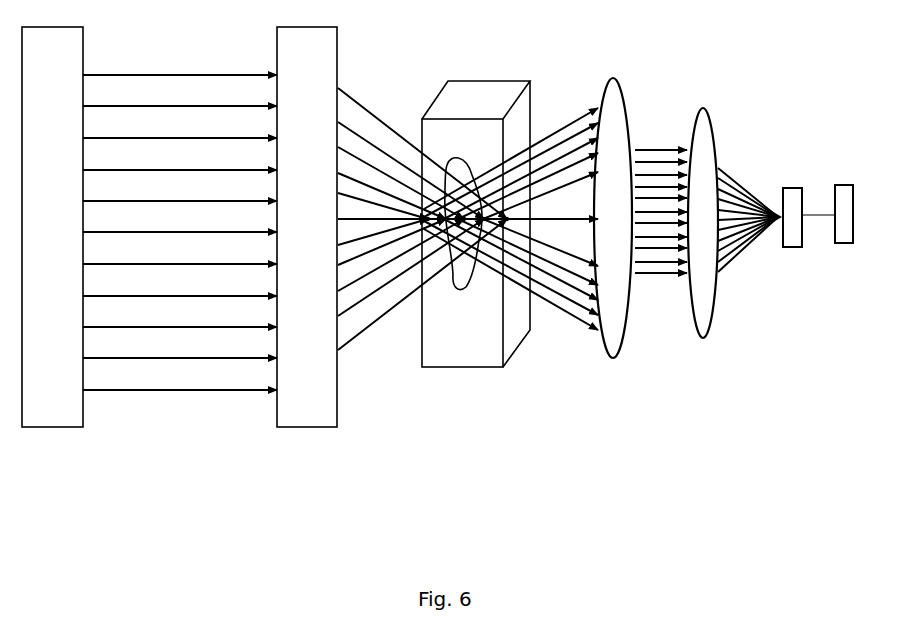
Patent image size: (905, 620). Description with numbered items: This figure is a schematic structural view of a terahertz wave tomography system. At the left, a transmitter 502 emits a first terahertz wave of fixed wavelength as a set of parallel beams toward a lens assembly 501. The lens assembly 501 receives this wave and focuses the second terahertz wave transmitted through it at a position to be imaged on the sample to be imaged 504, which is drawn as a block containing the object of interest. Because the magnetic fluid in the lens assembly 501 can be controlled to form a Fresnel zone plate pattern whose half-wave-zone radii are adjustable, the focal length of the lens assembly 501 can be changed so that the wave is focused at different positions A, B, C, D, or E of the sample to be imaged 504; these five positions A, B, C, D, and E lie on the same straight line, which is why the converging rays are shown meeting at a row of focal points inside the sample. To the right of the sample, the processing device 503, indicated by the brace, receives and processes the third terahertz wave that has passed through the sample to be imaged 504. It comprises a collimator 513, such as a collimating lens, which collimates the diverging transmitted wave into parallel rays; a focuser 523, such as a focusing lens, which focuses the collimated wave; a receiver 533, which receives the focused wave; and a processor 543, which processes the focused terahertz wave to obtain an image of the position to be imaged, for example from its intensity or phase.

The lens assembly 501 is at (298, 427).
The transmitter 502 is at (45, 427).
The processing device 503 is at (738, 298).
The sample to be imaged 504 is at (463, 367).
The collimator 513 is at (613, 358).
The focuser 523 is at (703, 338).
The receiver 533 is at (792, 247).
The processor 543 is at (858, 309).
The position to be imaged A is at (428, 218).
The position to be imaged B is at (446, 218).
The position to be imaged C is at (464, 218).
The position to be imaged D is at (484, 218).
The position to be imaged E is at (507, 218).